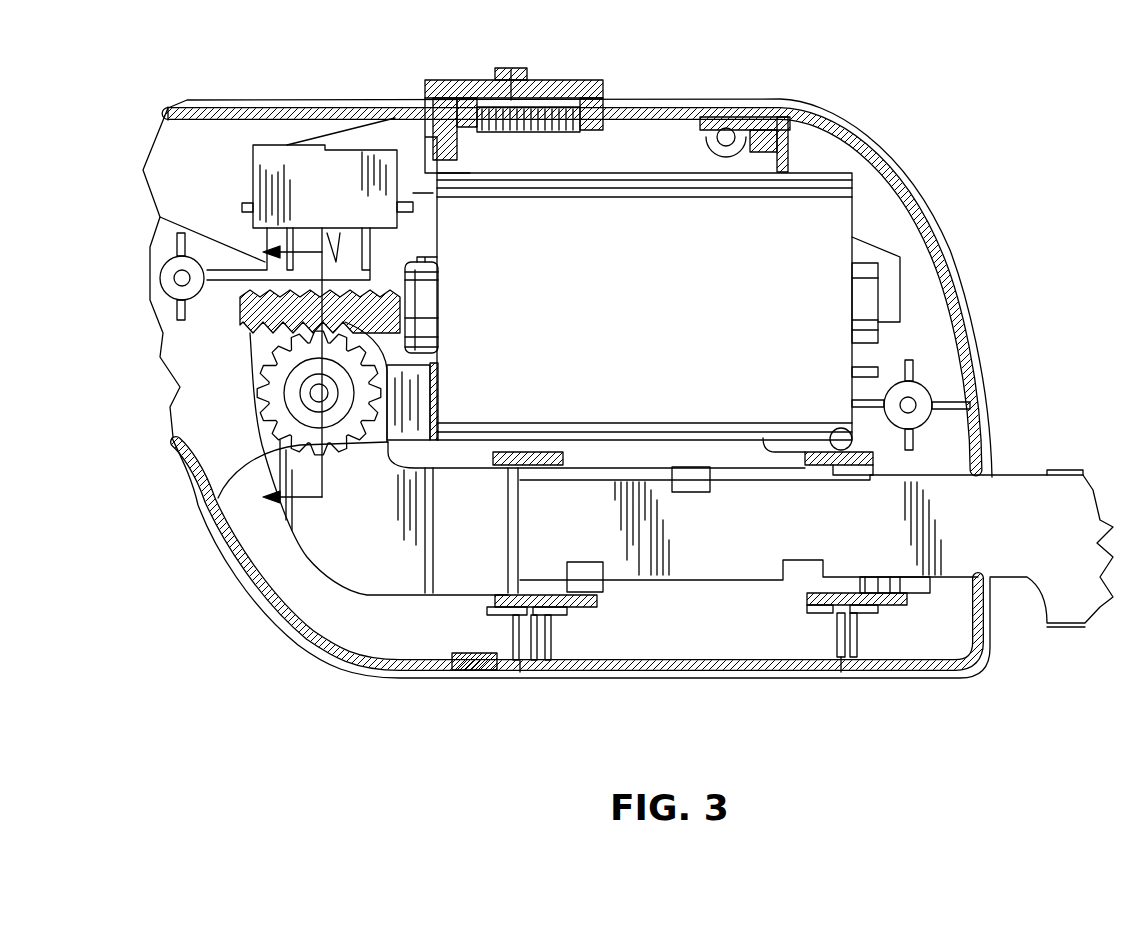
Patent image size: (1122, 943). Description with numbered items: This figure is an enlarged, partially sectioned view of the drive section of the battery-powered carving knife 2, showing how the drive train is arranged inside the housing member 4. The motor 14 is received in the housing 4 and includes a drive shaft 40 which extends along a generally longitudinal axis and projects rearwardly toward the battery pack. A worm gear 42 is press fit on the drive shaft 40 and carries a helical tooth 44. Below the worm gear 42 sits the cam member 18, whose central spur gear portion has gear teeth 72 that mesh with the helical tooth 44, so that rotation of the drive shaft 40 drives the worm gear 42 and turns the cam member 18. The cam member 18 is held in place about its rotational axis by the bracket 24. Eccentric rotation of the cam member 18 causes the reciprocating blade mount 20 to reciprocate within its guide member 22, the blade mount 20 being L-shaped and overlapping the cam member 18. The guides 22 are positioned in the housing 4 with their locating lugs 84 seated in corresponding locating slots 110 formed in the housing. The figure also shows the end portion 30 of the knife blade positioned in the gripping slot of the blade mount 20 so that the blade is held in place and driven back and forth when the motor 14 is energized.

The carving knife 2 is at (985, 172).
The housing member 4 is at (903, 50).
The motor 14 is at (638, 208).
The cam member 18 is at (358, 478).
The reciprocating blade mount 20 is at (455, 547).
The guide member 22 is at (597, 600).
The bracket 24 is at (440, 368).
The end portion 30 is at (790, 545).
The drive shaft 40 is at (425, 245).
The worm gear 42 is at (240, 320).
The helical tooth 44 is at (251, 334).
The gear teeth 72 is at (213, 529).
The locating lugs 84 is at (520, 670).
The locating slots 110 is at (513, 630).